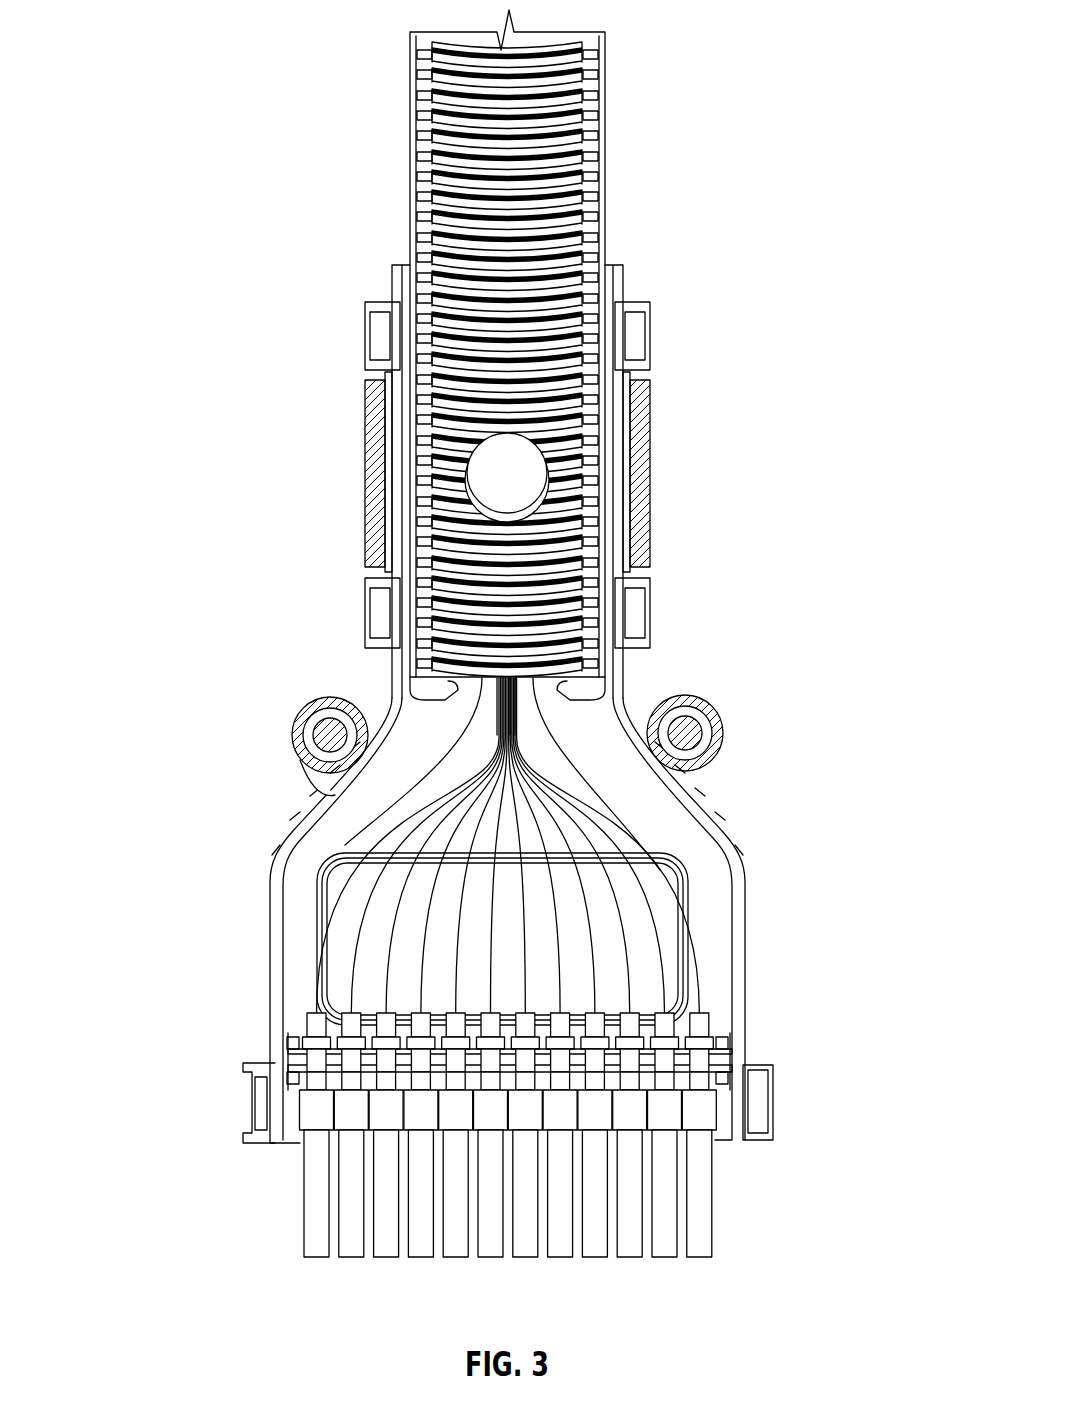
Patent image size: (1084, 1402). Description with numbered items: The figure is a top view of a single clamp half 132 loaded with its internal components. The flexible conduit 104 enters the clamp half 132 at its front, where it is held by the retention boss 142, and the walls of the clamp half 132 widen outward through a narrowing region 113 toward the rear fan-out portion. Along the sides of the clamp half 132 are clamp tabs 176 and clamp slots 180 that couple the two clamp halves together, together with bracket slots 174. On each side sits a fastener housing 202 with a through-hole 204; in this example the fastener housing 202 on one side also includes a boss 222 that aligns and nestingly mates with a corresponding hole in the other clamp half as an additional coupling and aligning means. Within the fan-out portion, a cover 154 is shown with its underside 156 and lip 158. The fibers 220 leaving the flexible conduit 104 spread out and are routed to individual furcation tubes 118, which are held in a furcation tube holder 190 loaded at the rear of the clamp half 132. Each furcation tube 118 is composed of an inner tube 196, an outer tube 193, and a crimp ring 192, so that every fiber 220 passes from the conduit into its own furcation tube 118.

The flexible conduit 104 is at (588, 143).
The narrowing region 113 is at (318, 793).
The furcation tubes 118 is at (690, 1258).
The clamp half 132 is at (222, 728).
The retention boss 142 is at (518, 435).
The cover 154 is at (368, 968).
The underside 156 is at (370, 967).
The lip 158 is at (458, 838).
The bracket slots 174 is at (383, 470).
The clamp tabs 176 is at (380, 343).
The clamp slots 180 is at (632, 343).
The furcation tube holder 190 is at (725, 1055).
The crimp ring 192 is at (703, 1117).
The outer tube 193 is at (705, 1195).
The inner tube 196 is at (712, 1027).
The fastener housings 202 is at (300, 712).
The through-holes 204 is at (325, 723).
The fibers 220 is at (353, 928).
The boss 222 is at (702, 745).